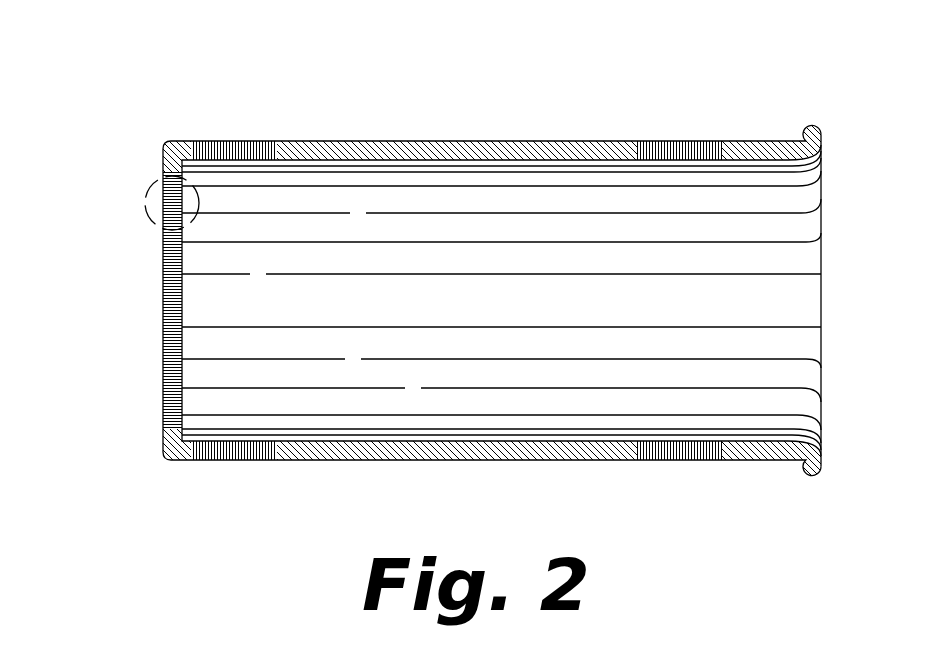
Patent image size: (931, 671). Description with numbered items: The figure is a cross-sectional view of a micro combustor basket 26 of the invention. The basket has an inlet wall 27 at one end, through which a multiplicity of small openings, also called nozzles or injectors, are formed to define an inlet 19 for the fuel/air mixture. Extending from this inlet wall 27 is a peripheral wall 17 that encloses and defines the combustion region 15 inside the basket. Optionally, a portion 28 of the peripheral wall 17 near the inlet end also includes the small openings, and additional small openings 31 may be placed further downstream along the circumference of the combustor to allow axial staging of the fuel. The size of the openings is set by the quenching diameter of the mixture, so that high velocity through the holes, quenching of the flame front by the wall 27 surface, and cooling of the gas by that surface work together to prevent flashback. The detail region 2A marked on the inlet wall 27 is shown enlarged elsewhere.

The combustion region 15 is at (471, 316).
The peripheral wall 17 is at (343, 141).
The inlet 19 is at (152, 461).
The combustor basket 26 is at (457, 461).
The wall 27 is at (133, 380).
The portion of the peripheral wall 28 is at (278, 137).
The additional small openings 31 is at (667, 145).
The detail view region 2A is at (145, 204).